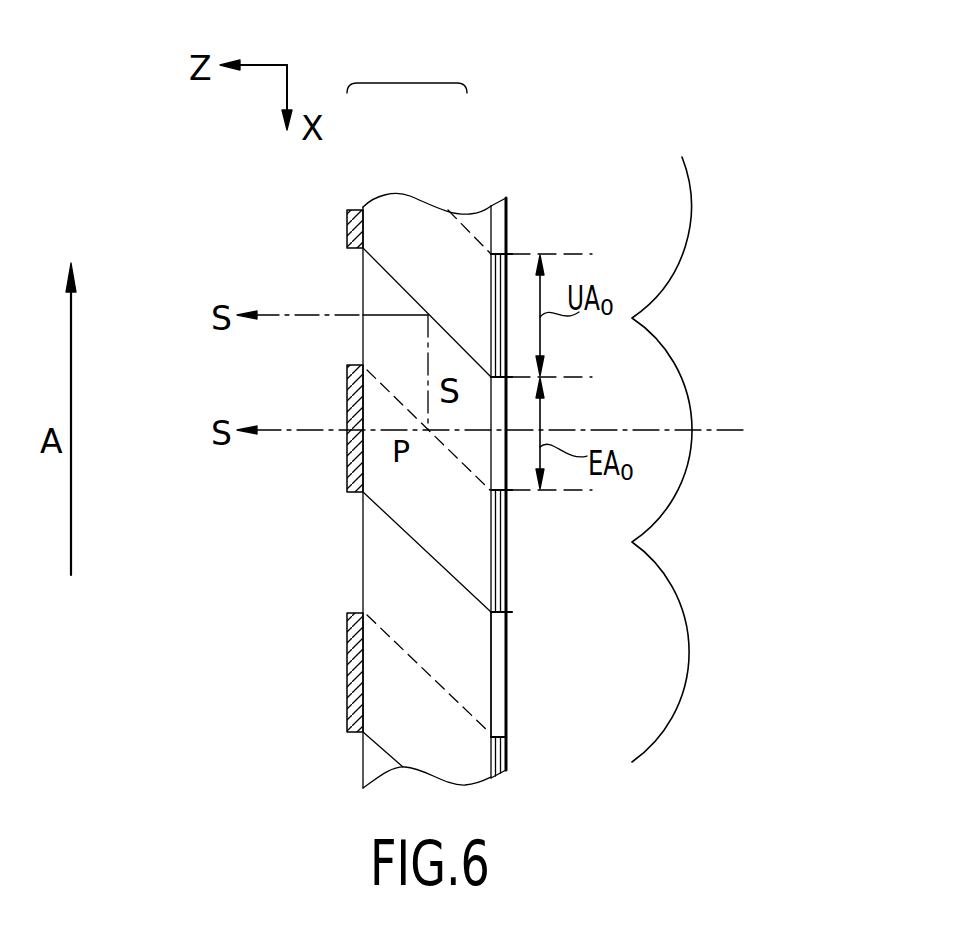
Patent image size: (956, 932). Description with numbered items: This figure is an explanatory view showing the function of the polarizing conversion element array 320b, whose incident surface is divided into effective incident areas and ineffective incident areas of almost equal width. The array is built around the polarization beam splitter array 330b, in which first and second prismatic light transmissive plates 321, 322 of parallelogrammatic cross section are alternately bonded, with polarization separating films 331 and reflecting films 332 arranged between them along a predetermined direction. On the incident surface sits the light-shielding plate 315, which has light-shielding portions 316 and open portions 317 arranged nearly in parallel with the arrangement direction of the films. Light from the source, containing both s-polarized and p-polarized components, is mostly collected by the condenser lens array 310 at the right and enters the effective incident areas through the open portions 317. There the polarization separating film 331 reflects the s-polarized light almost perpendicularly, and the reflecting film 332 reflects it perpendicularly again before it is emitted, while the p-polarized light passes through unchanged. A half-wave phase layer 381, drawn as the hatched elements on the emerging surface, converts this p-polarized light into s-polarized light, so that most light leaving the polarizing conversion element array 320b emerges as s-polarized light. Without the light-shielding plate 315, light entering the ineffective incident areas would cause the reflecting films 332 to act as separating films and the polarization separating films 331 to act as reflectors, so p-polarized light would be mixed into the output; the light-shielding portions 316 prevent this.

The condenser lens array 310 is at (705, 309).
The light-shielding plate 315 is at (499, 203).
The light-shielding portions 316 is at (513, 603).
The open portions 317 is at (497, 690).
The polarizing conversion element array 320b is at (400, 82).
The polarization beam splitter array 330b is at (436, 206).
The first prismatic light transmissive plate 321 is at (382, 342).
The second prismatic light transmissive plate 322 is at (390, 472).
The polarization separating film 331 is at (447, 455).
The reflecting film 332 is at (428, 277).
The λ/2 phase layer 381 is at (355, 209).